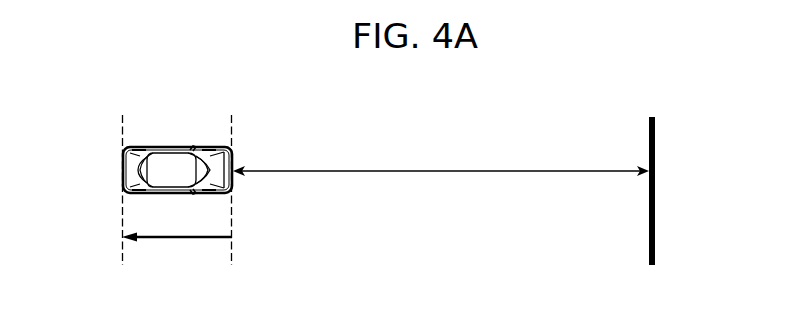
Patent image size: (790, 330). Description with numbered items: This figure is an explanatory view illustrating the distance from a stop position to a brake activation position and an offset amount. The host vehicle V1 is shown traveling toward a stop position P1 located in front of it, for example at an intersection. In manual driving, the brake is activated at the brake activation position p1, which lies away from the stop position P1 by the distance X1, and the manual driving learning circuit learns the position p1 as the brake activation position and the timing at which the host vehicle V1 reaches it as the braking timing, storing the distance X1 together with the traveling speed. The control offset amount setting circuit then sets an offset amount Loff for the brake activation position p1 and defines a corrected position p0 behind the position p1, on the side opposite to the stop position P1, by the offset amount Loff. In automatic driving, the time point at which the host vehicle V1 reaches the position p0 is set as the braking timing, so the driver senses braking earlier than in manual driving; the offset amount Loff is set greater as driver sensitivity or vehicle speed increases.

The host vehicle V1 is at (176, 148).
The corrected brake activation position p0 is at (121, 116).
The brake activation position p1 is at (233, 116).
The offset amount Loff is at (177, 252).
The distance from the host vehicle to the stop position X1 is at (441, 161).
The stop position P1 is at (655, 135).